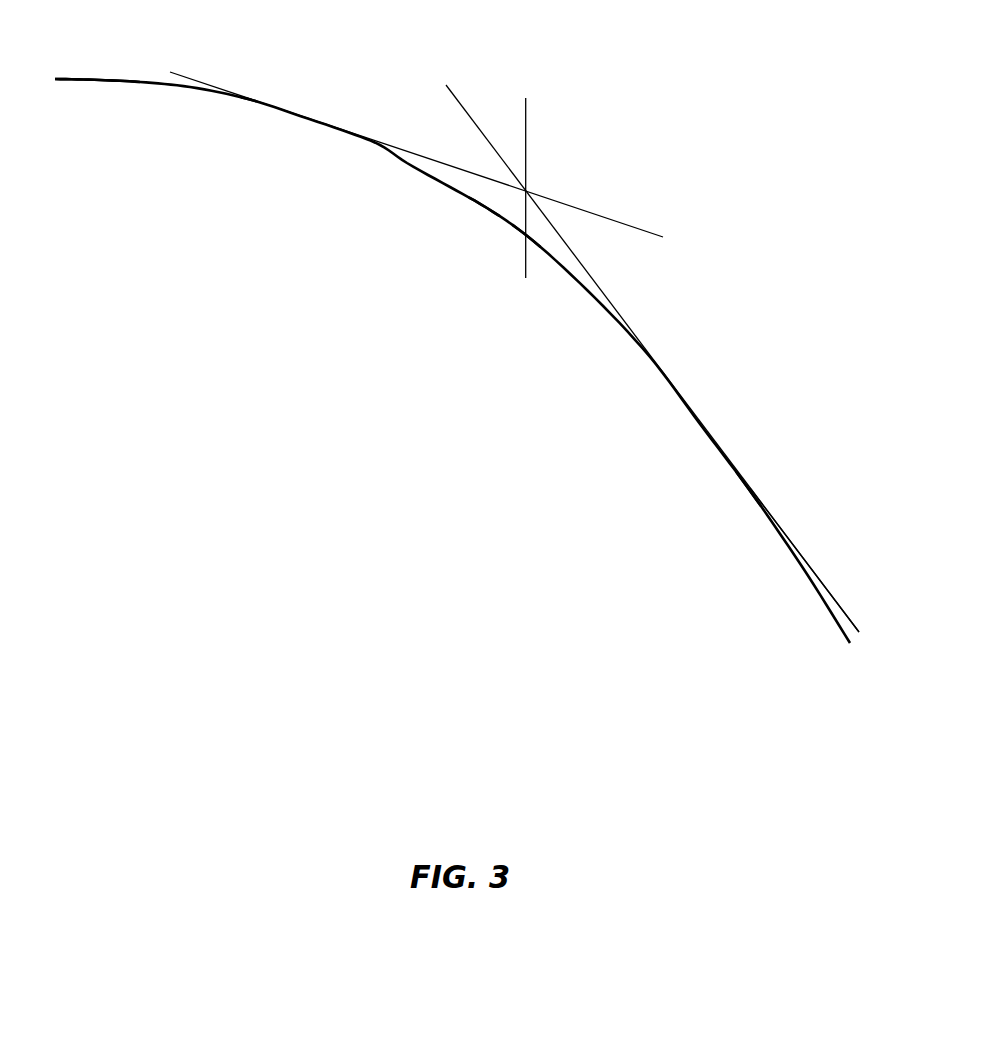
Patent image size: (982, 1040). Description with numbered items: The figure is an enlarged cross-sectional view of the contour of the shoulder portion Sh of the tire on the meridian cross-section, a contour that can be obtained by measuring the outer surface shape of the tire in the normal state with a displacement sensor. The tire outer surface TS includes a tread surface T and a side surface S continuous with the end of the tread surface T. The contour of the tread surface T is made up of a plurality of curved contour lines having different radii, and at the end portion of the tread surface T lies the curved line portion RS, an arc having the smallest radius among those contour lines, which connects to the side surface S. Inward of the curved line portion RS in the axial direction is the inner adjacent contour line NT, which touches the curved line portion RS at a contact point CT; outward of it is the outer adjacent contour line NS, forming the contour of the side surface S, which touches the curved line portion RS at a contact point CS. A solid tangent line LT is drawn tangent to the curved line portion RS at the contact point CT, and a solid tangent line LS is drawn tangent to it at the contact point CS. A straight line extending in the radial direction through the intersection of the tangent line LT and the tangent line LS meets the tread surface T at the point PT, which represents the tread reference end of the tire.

The tire outer surface TS is at (76, 78).
The tread surface T is at (138, 80).
The contact point CT is at (310, 117).
The inner adjacent contour line NT is at (248, 100).
The tangent line LT is at (642, 227).
The tangent line LS is at (463, 108).
The shoulder portion Sh is at (560, 177).
The curved line portion RS is at (487, 208).
The tread reference end PT is at (527, 236).
The contact point CS is at (710, 432).
The outer adjacent contour line NS is at (748, 488).
The side surface S is at (838, 603).